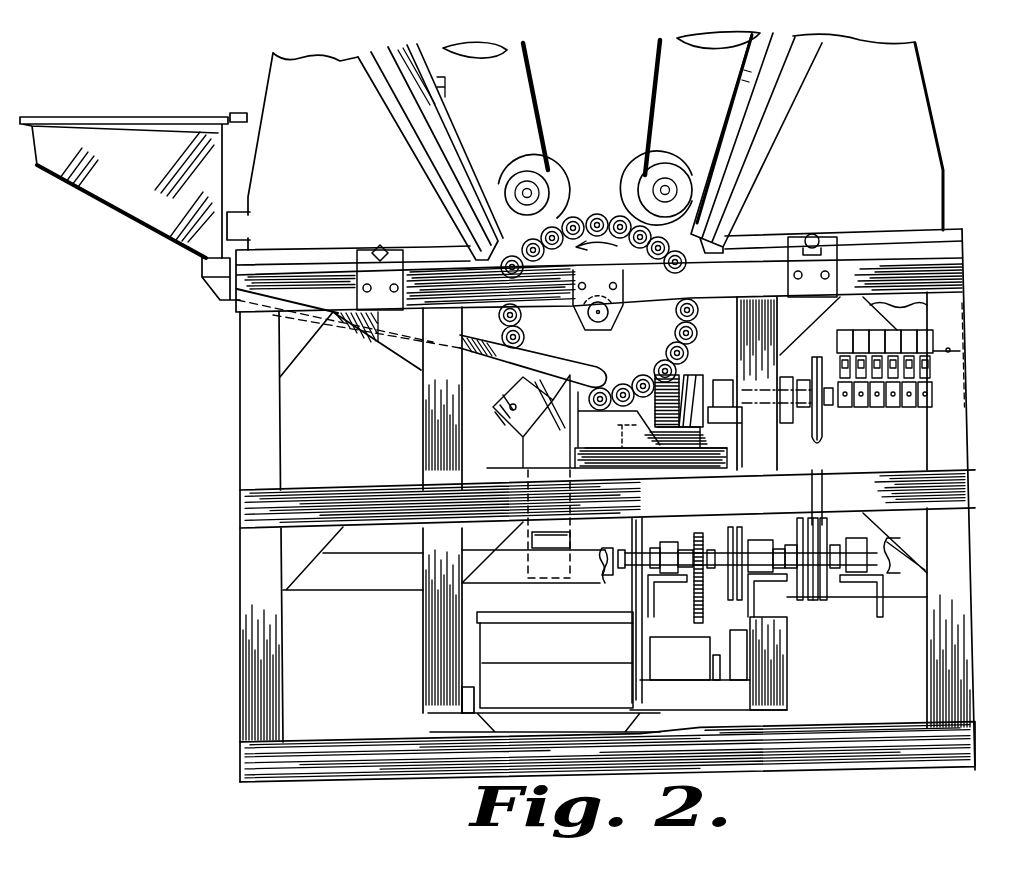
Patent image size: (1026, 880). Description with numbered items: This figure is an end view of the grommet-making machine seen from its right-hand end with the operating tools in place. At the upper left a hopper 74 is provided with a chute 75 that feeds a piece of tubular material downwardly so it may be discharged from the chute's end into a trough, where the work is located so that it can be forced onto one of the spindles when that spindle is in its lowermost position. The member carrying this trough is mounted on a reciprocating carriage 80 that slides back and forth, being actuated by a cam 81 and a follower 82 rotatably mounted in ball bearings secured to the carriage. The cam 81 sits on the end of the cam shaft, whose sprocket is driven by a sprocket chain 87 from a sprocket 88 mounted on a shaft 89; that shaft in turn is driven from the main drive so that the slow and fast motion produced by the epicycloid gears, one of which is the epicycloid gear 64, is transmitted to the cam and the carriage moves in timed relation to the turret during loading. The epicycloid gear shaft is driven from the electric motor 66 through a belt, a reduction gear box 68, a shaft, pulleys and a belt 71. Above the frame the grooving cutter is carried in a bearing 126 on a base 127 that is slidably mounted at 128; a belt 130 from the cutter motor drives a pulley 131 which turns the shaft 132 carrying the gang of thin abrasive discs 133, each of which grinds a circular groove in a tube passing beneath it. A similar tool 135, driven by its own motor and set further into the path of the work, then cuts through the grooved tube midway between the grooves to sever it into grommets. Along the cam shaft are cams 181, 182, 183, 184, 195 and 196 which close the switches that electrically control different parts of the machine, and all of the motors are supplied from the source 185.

The epicycloid gear 64 is at (697, 592).
The electric motor 66 is at (740, 632).
The reduction gear box 68 is at (680, 658).
The belt 71 is at (630, 594).
The hopper 74 is at (131, 204).
The chute 75 is at (493, 358).
The reciprocating carriage 80 is at (729, 440).
The cam 81 is at (699, 375).
The follower 82 is at (656, 411).
The sprocket chain 87 is at (808, 476).
The sprocket 88 is at (825, 585).
The shaft 89 is at (848, 548).
The bearing 126 is at (673, 161).
The base 127 is at (745, 110).
The slidable mounting 128 is at (777, 118).
The belt 130 is at (655, 82).
The pulley 131 is at (660, 168).
The shaft 132 is at (664, 189).
The abrasive discs 133 is at (518, 158).
The cutting-off tool 135 is at (565, 144).
The cam 181 is at (932, 397).
The cam 182 is at (910, 408).
The cam 183 is at (894, 408).
The cam 184 is at (878, 408).
The source 185 is at (824, 390).
The cam 195 is at (862, 408).
The cam 196 is at (846, 408).